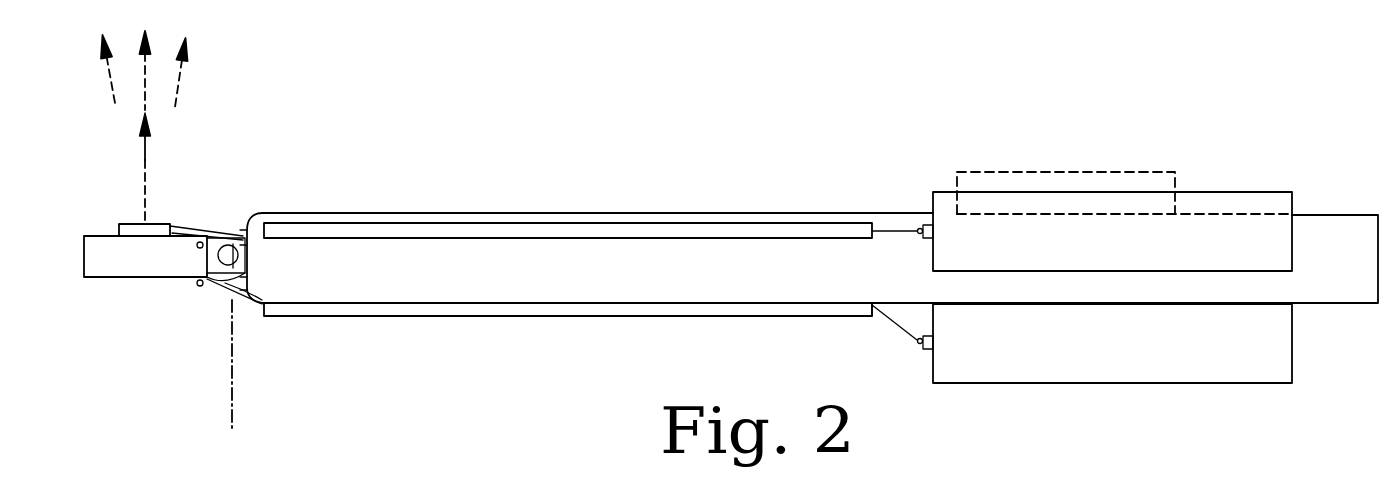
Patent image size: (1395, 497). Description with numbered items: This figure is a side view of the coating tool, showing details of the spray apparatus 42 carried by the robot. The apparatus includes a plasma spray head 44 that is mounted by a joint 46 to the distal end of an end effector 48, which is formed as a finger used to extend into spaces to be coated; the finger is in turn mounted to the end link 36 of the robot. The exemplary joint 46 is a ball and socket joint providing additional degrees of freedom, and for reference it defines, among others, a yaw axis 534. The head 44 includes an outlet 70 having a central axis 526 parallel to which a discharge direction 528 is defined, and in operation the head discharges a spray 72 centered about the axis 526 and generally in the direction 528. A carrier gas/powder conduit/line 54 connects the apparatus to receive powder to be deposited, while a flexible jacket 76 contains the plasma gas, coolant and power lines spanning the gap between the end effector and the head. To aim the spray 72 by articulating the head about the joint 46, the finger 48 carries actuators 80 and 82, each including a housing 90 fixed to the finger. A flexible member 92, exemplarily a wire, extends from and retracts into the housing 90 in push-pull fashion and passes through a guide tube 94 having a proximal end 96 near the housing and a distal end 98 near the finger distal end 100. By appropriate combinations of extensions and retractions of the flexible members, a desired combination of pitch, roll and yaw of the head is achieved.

The end link 36 is at (1105, 172).
The spray apparatus 42 is at (607, 155).
The plasma spray head 44 is at (155, 265).
The joint 46 is at (236, 214).
The end effector 48 is at (518, 292).
The carrier gas/powder conduit/line 54 is at (222, 232).
The outlet 70 is at (127, 222).
The spray 72 is at (178, 86).
The flexible jacket 76 is at (221, 280).
The actuator 80 is at (1100, 343).
The actuator 82 is at (1263, 230).
The housing 90 is at (1243, 363).
The flexible member 92 is at (897, 330).
The guide tube 94 is at (763, 318).
The proximal end 96 is at (875, 320).
The distal end 98 is at (260, 313).
The finger distal end 100 is at (250, 220).
The central axis 526 is at (148, 198).
The discharge direction 528 is at (143, 160).
The yaw axis 534 is at (233, 388).